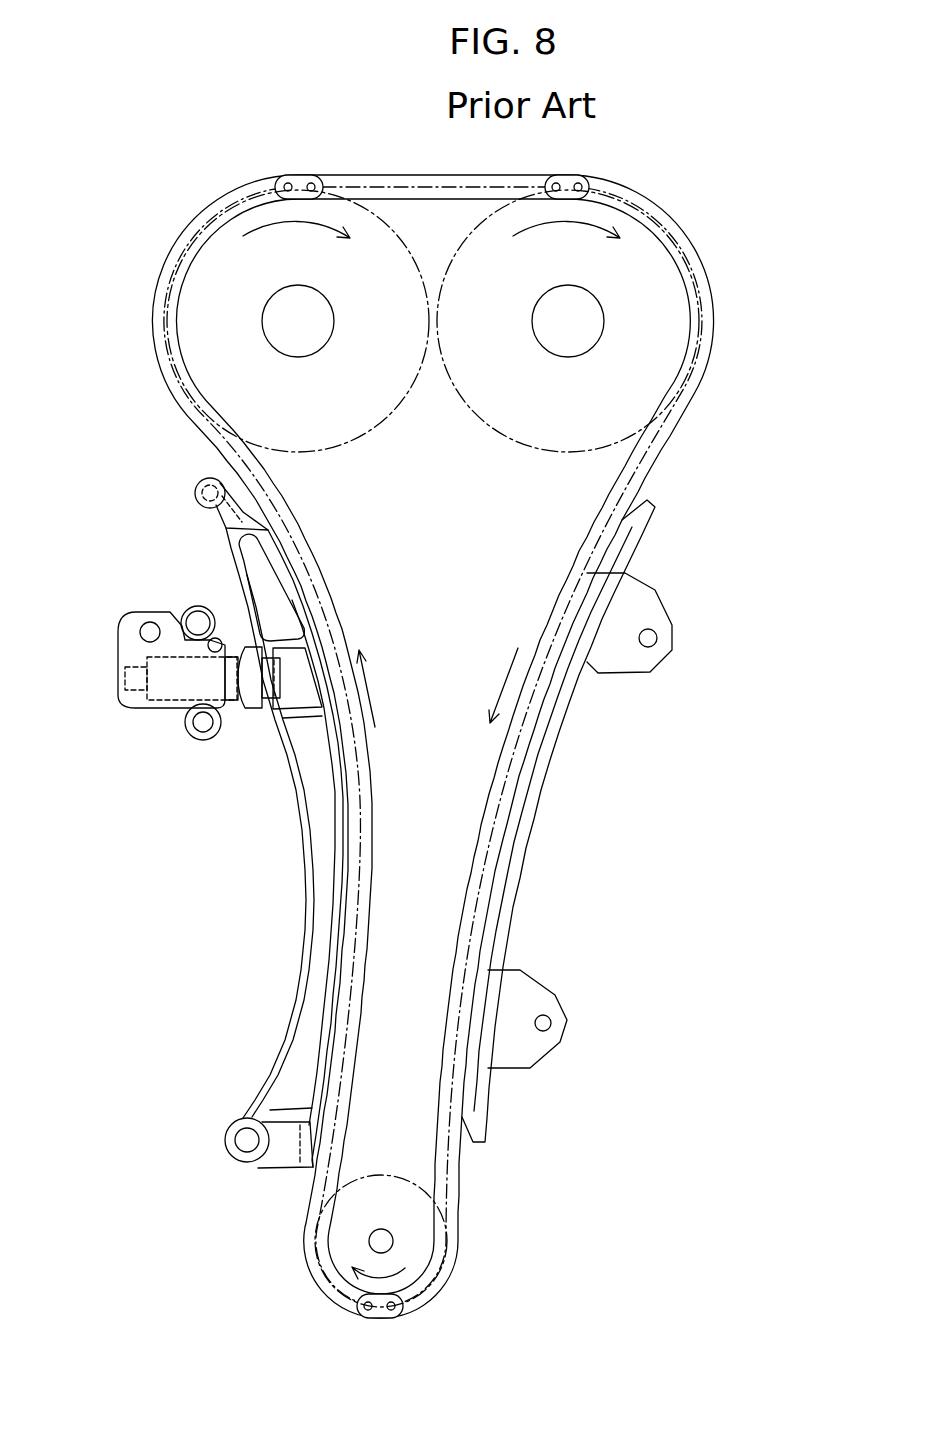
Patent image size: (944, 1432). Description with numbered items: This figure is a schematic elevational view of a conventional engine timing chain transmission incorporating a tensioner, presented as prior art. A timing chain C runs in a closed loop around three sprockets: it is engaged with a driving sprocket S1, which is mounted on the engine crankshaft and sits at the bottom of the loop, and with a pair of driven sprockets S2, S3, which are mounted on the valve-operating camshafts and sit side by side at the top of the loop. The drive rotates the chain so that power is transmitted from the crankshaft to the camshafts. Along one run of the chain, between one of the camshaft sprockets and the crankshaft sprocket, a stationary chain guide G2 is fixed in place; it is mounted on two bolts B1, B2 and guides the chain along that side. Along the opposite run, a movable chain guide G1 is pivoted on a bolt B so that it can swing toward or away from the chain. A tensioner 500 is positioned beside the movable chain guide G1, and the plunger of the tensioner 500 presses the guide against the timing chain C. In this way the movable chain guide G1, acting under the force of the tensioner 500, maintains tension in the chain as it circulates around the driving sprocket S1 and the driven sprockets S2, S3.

The timing chain C is at (650, 458).
The driving sprocket S1 is at (415, 1240).
The driven sprocket S2 is at (210, 312).
The driven sprocket S3 is at (637, 305).
The movable chain guide G1 is at (312, 1028).
The stationary chain guide G2 is at (515, 872).
The tensioner 500 is at (135, 640).
The bolt B is at (240, 1142).
The bolt B1 is at (660, 640).
The bolt B2 is at (552, 1024).